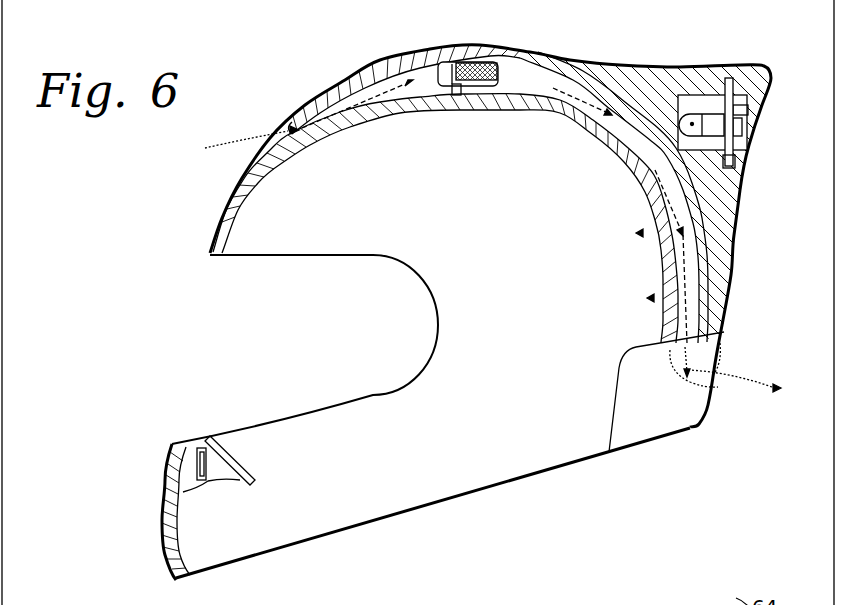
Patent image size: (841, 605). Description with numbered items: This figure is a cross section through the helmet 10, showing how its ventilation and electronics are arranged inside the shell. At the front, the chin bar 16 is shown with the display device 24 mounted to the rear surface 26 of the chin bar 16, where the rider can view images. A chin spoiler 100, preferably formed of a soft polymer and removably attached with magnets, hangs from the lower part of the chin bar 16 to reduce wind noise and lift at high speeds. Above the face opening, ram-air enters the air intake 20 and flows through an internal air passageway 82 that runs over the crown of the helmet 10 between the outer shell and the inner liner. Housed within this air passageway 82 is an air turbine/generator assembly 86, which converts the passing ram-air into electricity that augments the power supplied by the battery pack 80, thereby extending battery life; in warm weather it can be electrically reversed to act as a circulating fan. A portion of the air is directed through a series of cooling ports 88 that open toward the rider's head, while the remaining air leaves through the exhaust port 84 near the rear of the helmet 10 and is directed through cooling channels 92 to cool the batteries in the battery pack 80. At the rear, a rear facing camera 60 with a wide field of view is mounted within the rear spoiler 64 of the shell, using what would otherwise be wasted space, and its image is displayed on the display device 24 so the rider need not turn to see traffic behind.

The helmet 10 is at (550, 58).
The chin bar 16 is at (161, 526).
The air intake 20 is at (283, 128).
The display device 24 is at (223, 447).
The rear surface of chin bar 26 is at (183, 526).
The rear facing camera 60 is at (747, 128).
The rear spoiler 64 is at (731, 63).
The battery pack 80 is at (723, 343).
The air passageway 82 is at (348, 100).
The exhaust port 84 is at (661, 324).
The air turbine/generator assembly 86 is at (476, 54).
The cooling ports 88 is at (650, 296).
The cooling channels 92 is at (755, 388).
The chin spoiler 100 is at (203, 573).